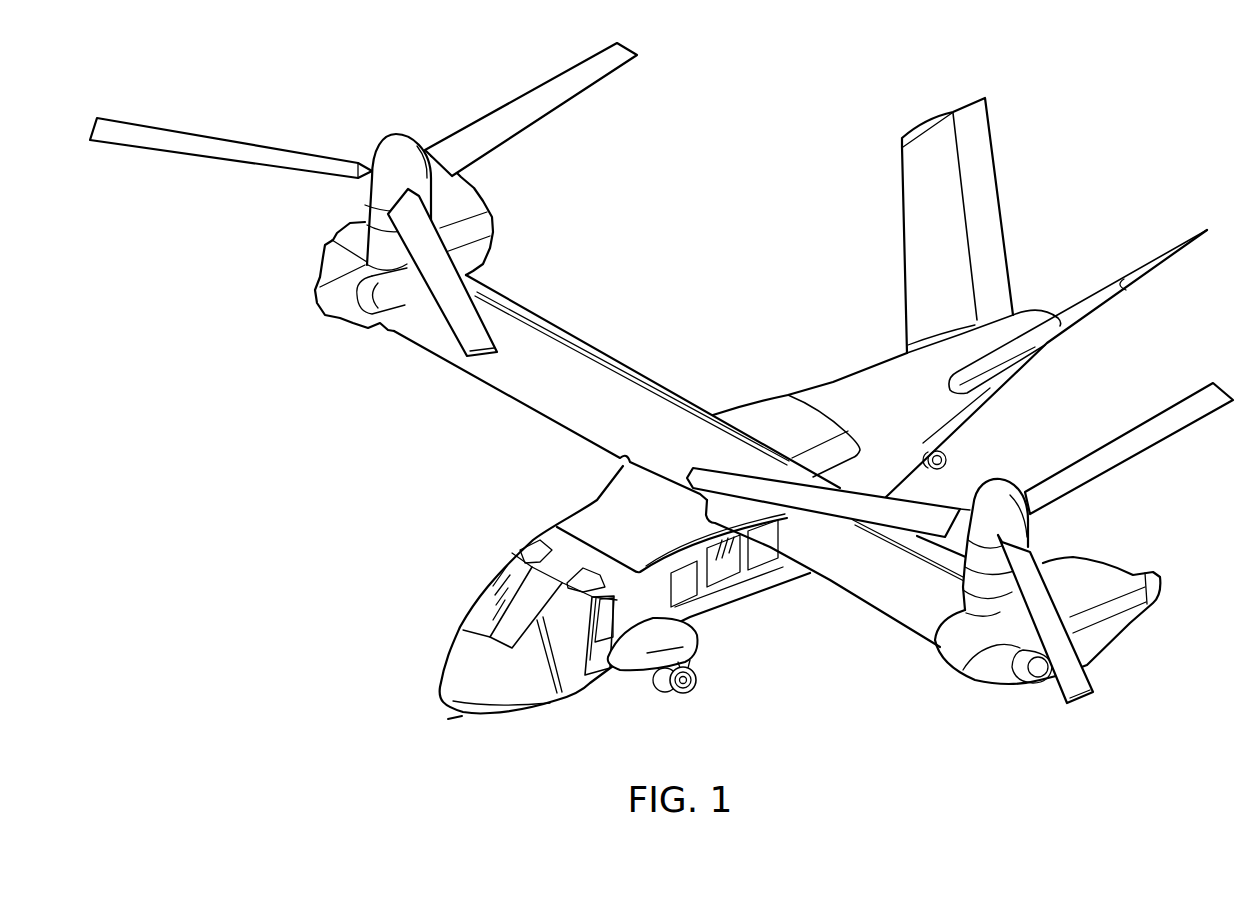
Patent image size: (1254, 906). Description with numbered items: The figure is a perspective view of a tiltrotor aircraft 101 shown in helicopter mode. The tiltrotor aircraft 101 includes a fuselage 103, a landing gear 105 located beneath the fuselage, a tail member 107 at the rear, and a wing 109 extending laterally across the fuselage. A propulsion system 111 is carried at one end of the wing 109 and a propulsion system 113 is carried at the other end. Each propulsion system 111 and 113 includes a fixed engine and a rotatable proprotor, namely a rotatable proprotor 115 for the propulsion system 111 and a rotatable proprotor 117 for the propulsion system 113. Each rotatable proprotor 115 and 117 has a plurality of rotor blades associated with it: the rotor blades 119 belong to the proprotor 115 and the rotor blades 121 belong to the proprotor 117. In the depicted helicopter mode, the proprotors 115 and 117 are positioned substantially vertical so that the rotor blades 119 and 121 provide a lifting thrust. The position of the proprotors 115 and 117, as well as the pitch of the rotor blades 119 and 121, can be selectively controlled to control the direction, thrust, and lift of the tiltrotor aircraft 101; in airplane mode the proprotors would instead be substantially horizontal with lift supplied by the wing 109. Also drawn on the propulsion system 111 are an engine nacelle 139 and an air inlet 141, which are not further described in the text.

The tiltrotor aircraft 101 is at (661, 401).
The fuselage 103 is at (508, 718).
The landing gear 105 is at (687, 702).
The tail member 107 is at (997, 184).
The wing 109 is at (856, 600).
The propulsion system 111 is at (960, 577).
The propulsion system 113 is at (363, 199).
The rotatable proprotor 115 is at (1032, 533).
The rotatable proprotor 117 is at (399, 131).
The rotor blades 119 is at (1195, 422).
The rotor blades 121 is at (521, 94).
The engine nacelle 139 is at (1126, 645).
The air inlet 141 is at (1028, 670).